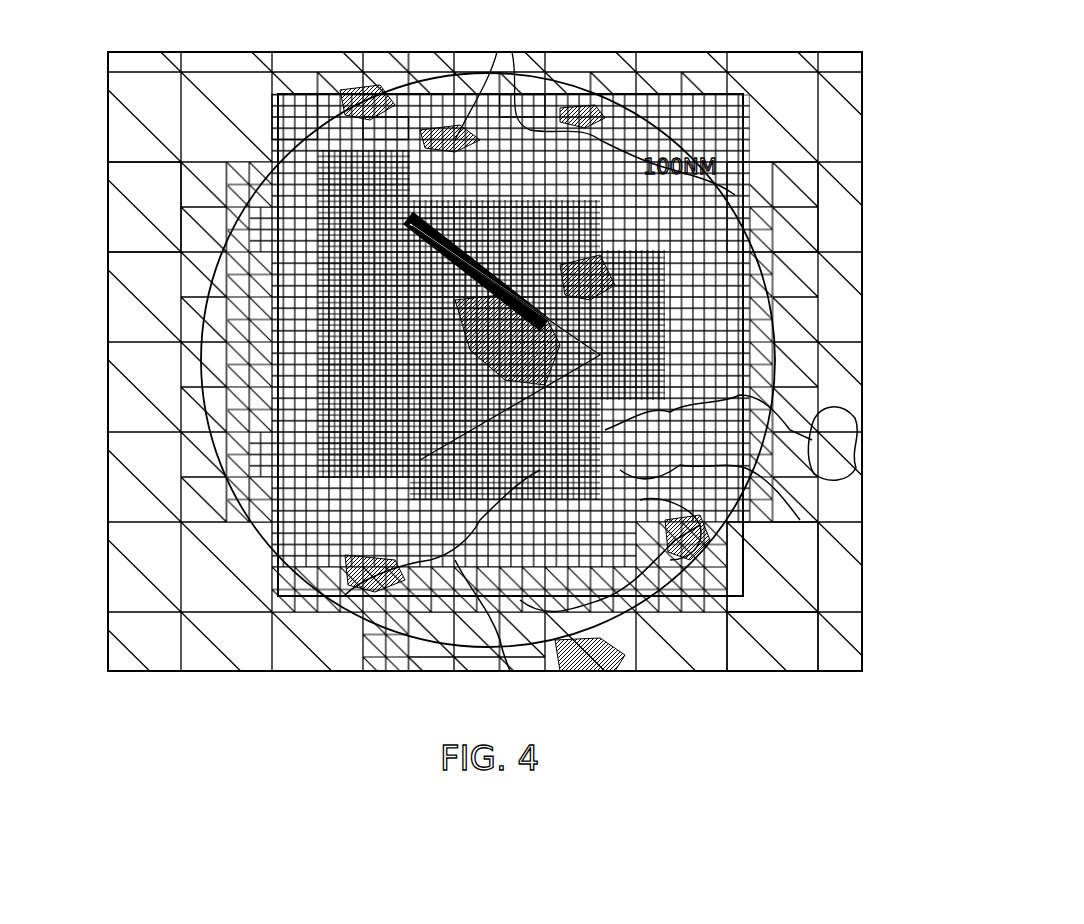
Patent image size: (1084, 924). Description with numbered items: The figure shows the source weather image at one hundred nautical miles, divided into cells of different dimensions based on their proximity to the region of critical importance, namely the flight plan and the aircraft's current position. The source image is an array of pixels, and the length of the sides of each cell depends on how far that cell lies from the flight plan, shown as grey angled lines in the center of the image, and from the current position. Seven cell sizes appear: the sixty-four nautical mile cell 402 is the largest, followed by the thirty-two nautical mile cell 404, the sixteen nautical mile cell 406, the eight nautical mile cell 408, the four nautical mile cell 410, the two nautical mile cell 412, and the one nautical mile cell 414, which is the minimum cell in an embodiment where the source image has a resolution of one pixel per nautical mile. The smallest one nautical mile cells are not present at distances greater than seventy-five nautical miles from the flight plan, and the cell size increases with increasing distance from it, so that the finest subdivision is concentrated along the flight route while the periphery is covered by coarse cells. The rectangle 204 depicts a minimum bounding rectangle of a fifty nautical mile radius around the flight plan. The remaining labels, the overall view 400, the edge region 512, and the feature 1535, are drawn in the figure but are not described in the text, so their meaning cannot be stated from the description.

The weather display grid 400 is at (184, 72).
The display edge region 512 is at (108, 252).
The 32 NM cell 404 is at (820, 250).
The 16 NM cell 406 is at (818, 522).
The 64 NM cell 402 is at (818, 612).
The 4 NM cell 410 is at (315, 100).
The 2 NM cell 412 is at (375, 130).
The 1 NM cell 414 is at (518, 110).
The rectangle 204 is at (743, 597).
The 8 NM cell 408 is at (655, 598).
The coastline 1535 is at (513, 85).